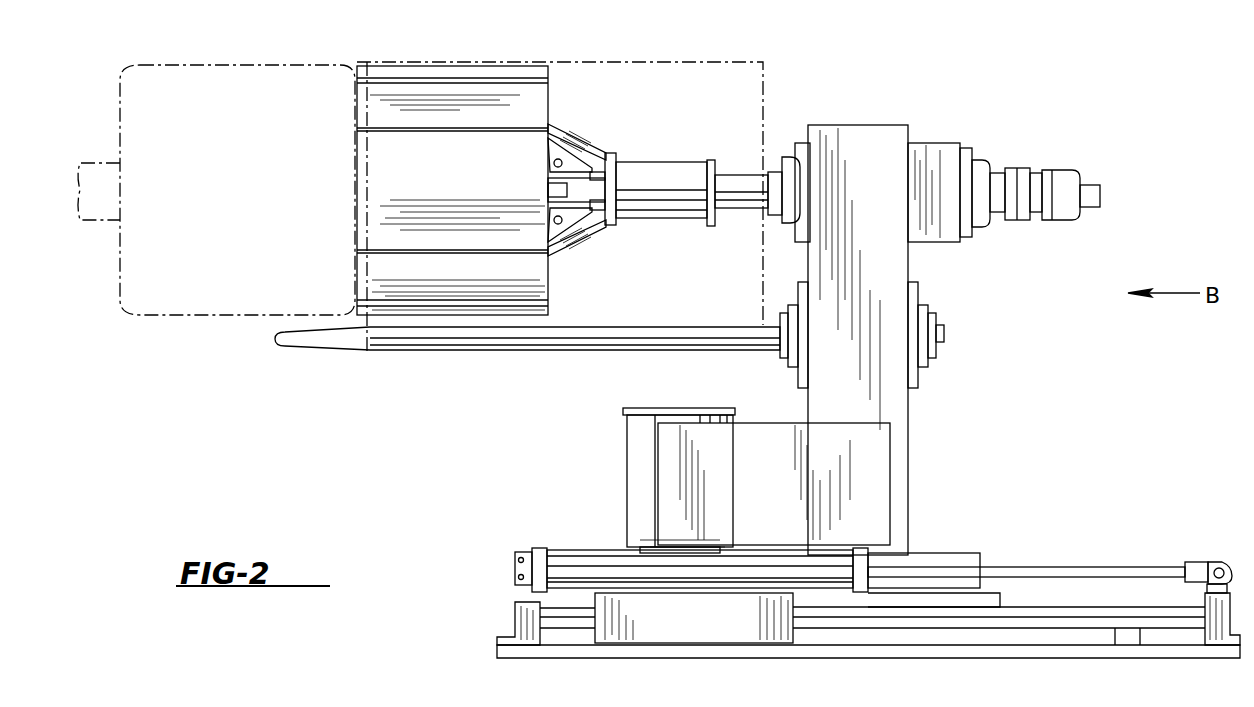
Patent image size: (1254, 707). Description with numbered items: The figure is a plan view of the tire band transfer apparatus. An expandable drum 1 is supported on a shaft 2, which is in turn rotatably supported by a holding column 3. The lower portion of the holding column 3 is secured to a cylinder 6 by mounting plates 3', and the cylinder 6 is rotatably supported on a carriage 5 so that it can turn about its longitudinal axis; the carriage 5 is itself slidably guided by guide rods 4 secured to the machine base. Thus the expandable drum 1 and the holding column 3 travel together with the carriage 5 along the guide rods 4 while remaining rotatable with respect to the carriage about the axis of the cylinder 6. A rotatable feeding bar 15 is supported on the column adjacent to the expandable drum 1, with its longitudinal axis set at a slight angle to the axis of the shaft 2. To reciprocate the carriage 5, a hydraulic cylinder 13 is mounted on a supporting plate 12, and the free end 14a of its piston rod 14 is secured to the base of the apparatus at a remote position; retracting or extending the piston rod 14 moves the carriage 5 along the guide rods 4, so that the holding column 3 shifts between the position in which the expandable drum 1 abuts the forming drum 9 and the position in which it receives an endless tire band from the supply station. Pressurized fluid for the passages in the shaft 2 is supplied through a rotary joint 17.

The expandable drum 1 is at (456, 100).
The shaft 2 is at (736, 188).
The holding column 3 is at (876, 320).
The mounting plates 3' is at (774, 466).
The guide rods 4 is at (1037, 610).
The carriage 5 is at (612, 605).
The cylinder 6 is at (640, 447).
The forming drum 9 is at (262, 88).
The supporting plate 12 is at (947, 560).
The hydraulic cylinder 13 is at (748, 560).
The piston rod 14 is at (1095, 568).
The free end of the piston rod 14a is at (1190, 562).
The rotatable feeding bar 15 is at (387, 344).
The rotary joint 17 is at (1090, 185).